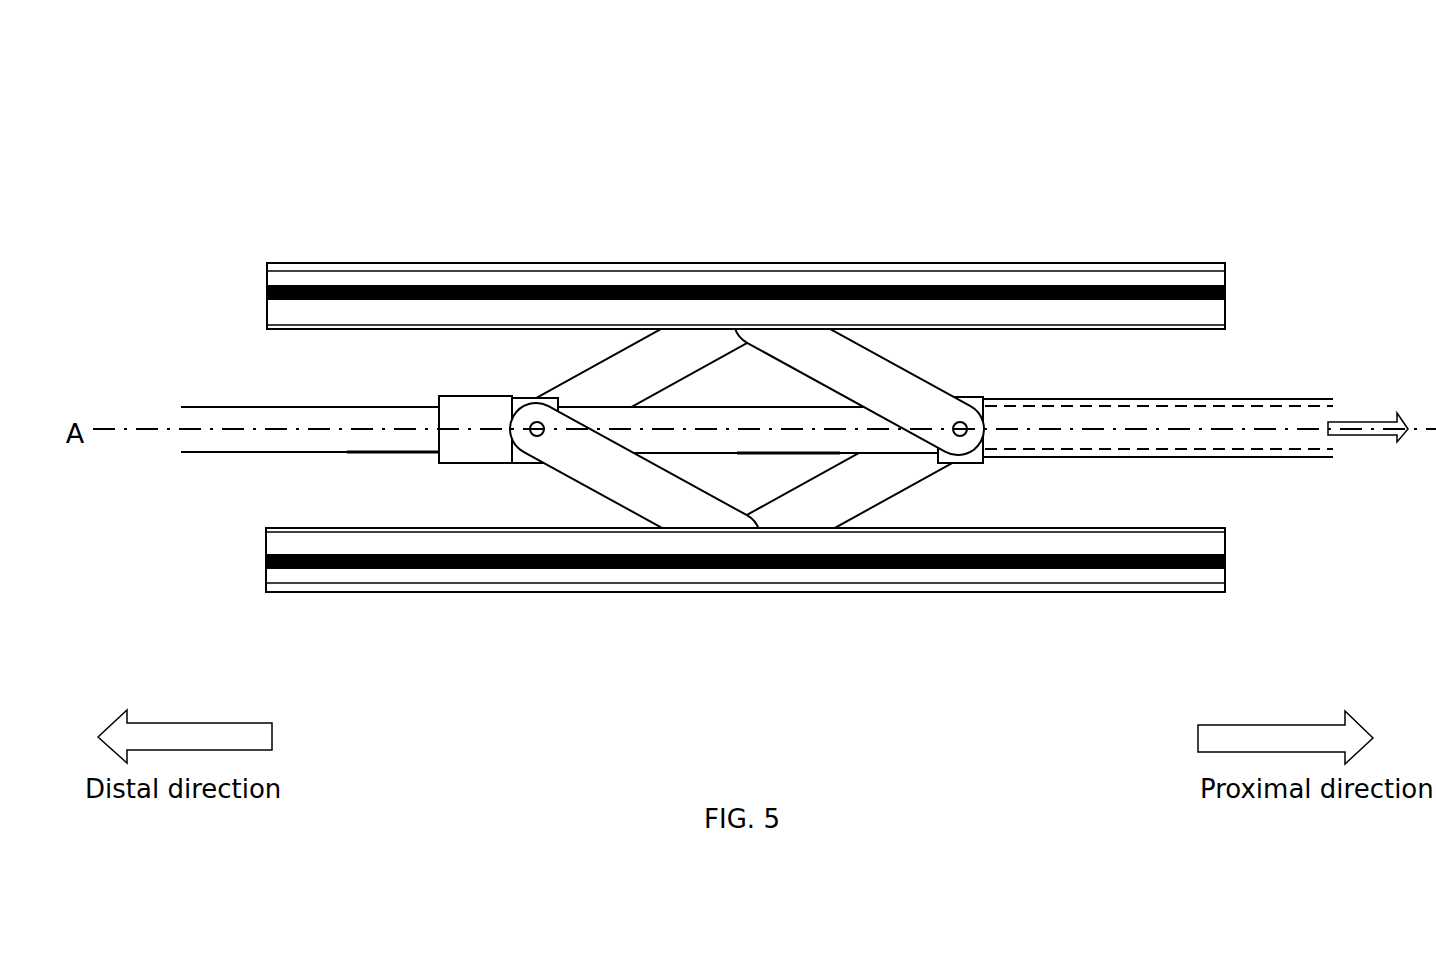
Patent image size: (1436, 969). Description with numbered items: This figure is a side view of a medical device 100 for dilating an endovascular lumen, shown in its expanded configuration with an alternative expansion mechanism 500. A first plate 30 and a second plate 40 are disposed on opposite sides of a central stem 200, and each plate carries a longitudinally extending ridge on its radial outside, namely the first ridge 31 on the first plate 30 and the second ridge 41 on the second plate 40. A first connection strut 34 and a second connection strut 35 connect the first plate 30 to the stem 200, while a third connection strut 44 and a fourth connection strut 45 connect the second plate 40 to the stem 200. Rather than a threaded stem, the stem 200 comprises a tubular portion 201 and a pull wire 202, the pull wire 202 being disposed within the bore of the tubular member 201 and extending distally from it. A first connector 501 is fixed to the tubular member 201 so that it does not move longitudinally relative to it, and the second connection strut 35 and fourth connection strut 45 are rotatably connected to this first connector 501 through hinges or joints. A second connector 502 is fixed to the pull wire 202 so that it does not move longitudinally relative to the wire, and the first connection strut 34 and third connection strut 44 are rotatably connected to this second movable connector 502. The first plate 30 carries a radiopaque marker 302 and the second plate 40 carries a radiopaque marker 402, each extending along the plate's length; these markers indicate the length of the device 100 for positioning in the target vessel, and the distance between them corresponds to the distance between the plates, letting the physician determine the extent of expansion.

The medical device 100 is at (532, 215).
The first plate 30 is at (983, 262).
The first ridge 31 is at (705, 262).
The first radiopaque marker 302 is at (288, 284).
The first connection strut 34 is at (610, 357).
The second connection strut 35 is at (858, 344).
The second plate 40 is at (831, 596).
The second ridge 41 is at (611, 592).
The radiopaque marker 402 is at (291, 570).
The third connection strut 44 is at (572, 485).
The fourth connection strut 45 is at (910, 483).
The stem 200 is at (1173, 397).
The tubular portion 201 is at (1008, 460).
The pull wire 202 is at (690, 454).
The expansion mechanism 500 is at (997, 363).
The first connector 501 is at (960, 397).
The second connector 502 is at (538, 393).